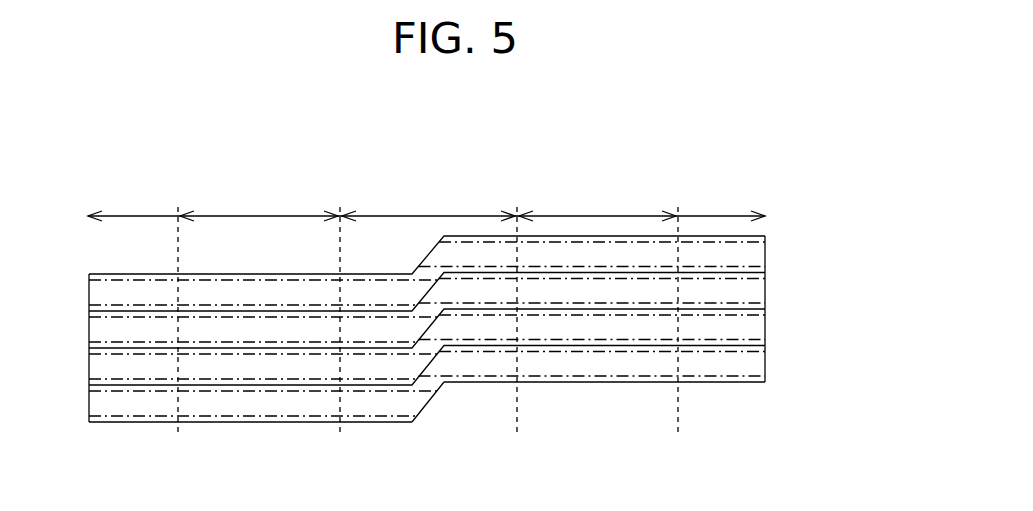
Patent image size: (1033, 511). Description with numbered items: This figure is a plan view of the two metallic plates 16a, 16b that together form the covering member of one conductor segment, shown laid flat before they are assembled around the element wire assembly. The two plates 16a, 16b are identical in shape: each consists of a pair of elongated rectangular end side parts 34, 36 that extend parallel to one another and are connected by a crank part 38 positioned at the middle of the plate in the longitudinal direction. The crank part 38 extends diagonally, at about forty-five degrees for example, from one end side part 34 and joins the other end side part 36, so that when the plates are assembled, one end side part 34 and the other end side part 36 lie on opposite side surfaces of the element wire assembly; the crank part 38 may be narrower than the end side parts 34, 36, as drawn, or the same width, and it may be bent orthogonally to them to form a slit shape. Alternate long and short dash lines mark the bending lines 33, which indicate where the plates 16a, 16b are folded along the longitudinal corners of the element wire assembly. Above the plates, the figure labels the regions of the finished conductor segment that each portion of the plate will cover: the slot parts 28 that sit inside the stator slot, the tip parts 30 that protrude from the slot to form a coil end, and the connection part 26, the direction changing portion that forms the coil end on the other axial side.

The metallic plate 16a is at (757, 253).
The metallic plate 16b is at (757, 289).
The connection part 26 is at (429, 163).
The slot part 28 is at (428, 271).
The tip part 30 is at (427, 270).
The bending line 33 is at (692, 350).
The end side part 34 is at (260, 423).
The end side part 36 is at (606, 383).
The crank part 38 is at (430, 403).